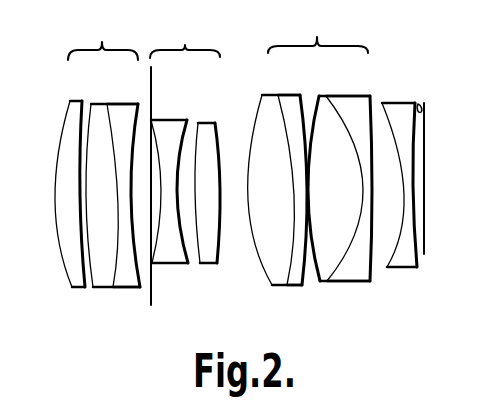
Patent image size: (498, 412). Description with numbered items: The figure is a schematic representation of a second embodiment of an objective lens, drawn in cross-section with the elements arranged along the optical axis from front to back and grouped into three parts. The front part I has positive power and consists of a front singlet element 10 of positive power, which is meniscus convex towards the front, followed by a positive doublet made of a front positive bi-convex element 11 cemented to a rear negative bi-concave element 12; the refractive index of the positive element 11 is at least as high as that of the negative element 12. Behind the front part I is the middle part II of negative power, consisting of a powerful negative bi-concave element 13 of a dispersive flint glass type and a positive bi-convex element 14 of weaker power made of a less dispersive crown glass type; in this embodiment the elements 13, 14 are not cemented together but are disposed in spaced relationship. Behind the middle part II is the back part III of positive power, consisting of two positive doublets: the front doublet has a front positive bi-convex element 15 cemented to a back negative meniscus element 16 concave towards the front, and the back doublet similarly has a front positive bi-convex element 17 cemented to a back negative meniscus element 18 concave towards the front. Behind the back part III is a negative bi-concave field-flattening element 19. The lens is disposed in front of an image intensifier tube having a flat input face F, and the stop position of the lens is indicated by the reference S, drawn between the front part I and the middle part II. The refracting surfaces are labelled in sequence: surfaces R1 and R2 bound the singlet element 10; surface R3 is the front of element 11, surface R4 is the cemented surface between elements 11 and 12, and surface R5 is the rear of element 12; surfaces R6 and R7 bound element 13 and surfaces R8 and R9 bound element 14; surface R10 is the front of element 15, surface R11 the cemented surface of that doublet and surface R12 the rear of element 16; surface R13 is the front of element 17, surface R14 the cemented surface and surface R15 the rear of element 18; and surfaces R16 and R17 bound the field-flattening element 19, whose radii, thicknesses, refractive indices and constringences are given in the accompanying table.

The front part I is at (104, 33).
The middle part II is at (194, 33).
The back part III is at (332, 33).
The front singlet element 10 is at (69, 196).
The front positive bi-convex element 11 is at (112, 215).
The rear negative bi-concave element 12 is at (133, 215).
The negative bi-concave element 13 is at (171, 191).
The positive bi-convex element 14 is at (220, 205).
The front positive bi-convex element 15 is at (262, 209).
The back negative meniscus element 16 is at (310, 194).
The front positive bi-convex element 17 is at (339, 209).
The back negative meniscus element 18 is at (374, 193).
The field-flattening element 19 is at (423, 201).
The stop position S is at (151, 305).
The flat input face F is at (424, 254).
The surface R1 is at (63, 121).
The surface R2 is at (87, 108).
The surface R3 is at (84, 162).
The surface R4 is at (117, 222).
The surface R5 is at (132, 196).
The surface R6 is at (159, 160).
The surface R7 is at (184, 128).
The surface R8 is at (198, 124).
The surface R9 is at (220, 165).
The surface R10 is at (248, 230).
The surface R11 is at (290, 153).
The surface R12 is at (300, 97).
The surface R13 is at (322, 141).
The surface R14 is at (355, 241).
The surface R15 is at (372, 102).
The surface R16 is at (405, 176).
The surface R17 is at (420, 104).